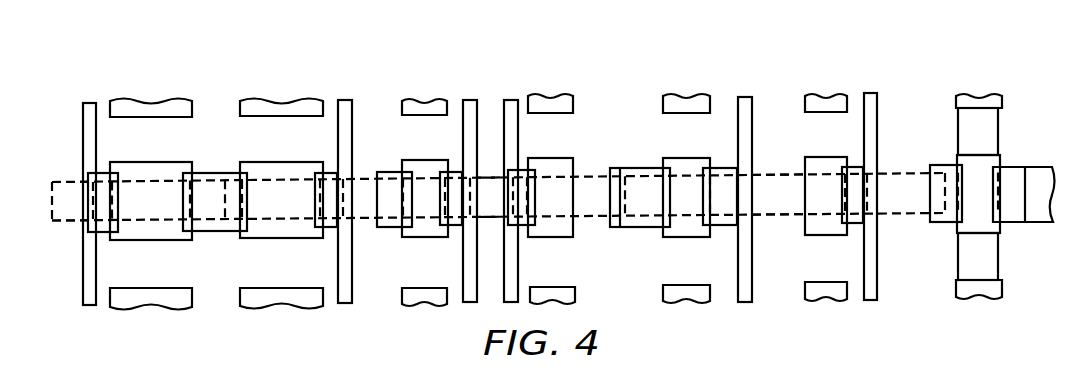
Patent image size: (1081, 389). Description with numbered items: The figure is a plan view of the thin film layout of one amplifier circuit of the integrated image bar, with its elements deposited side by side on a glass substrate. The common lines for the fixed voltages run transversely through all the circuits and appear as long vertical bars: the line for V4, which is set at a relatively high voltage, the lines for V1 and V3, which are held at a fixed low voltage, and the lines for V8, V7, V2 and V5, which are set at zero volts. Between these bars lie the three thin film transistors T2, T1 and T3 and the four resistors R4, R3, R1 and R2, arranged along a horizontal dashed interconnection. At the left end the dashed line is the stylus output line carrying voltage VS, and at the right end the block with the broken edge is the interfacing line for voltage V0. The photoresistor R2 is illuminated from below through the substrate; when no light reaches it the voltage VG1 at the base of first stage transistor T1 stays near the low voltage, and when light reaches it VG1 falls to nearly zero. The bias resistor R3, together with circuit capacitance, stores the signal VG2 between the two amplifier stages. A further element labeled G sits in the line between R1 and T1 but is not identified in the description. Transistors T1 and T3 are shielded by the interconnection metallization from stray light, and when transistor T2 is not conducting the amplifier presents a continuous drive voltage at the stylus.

The stylus output line voltage VS is at (72, 200).
The fixed voltage line V4 is at (91, 103).
The resistor R4 is at (160, 193).
The transistor T2 is at (283, 192).
The fixed voltage line V8 is at (342, 98).
The bias resistor R3 is at (425, 192).
The fixed voltage line V3 is at (467, 98).
The fixed voltage line V1 is at (510, 98).
The resistor R1 is at (550, 183).
The gate electrode G is at (601, 142).
The first stage amplifier transistor T1 is at (687, 188).
The inter-stage signal VG2 is at (488, 218).
The fixed voltage line V7 is at (743, 98).
The base voltage of first stage transistor VG1 is at (763, 220).
The photoresistor R2 is at (827, 180).
The fixed voltage line V2 is at (870, 95).
The transistor T3 is at (975, 178).
The fixed voltage line V5 is at (985, 130).
The interfacing line voltage V0 is at (1038, 180).